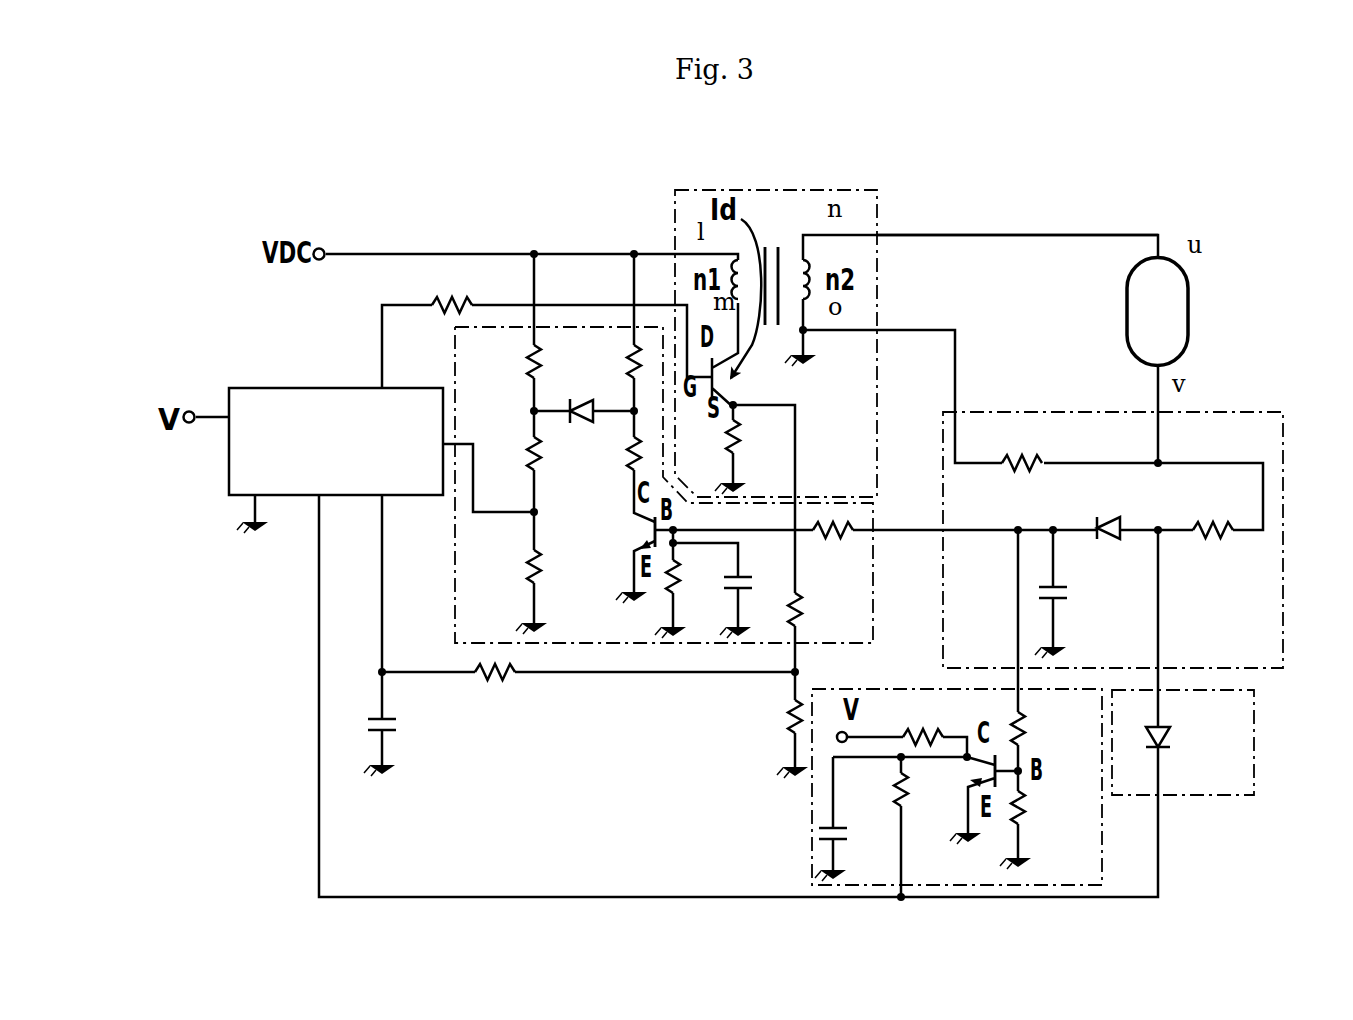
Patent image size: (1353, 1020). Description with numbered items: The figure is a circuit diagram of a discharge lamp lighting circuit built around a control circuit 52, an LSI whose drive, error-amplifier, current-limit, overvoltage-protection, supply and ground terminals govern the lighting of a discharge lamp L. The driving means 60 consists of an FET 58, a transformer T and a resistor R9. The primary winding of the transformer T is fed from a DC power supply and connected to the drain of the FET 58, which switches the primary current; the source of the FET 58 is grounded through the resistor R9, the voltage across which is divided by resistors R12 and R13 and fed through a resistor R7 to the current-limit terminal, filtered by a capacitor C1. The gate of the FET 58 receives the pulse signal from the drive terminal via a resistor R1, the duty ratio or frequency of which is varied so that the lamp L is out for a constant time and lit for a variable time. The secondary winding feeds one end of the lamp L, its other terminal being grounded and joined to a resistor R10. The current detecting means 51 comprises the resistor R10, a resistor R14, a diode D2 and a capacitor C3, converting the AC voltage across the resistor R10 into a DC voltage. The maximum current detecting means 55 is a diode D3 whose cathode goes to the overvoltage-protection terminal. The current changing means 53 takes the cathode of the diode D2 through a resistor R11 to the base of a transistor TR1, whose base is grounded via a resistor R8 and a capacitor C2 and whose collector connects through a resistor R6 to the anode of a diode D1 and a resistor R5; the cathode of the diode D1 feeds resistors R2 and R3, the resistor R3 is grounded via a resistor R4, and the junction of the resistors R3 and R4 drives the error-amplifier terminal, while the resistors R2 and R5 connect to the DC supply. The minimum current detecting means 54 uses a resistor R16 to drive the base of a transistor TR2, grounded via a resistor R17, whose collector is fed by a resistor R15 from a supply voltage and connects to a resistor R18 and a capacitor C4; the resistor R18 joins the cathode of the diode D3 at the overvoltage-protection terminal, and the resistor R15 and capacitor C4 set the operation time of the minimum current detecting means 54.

The current detecting means 51 is at (1285, 507).
The control circuit 52 is at (297, 387).
The current changing means 53 is at (876, 597).
The minimum current detecting means 54 is at (809, 831).
The maximum current detecting means 55 is at (1257, 758).
The FET 58 is at (776, 343).
The driving means 60 is at (955, 217).
The discharge lamp L is at (1165, 323).
The transformer T is at (773, 261).
The transistor TR1 is at (619, 529).
The transistor TR2 is at (956, 774).
The resistor R1 is at (572, 320).
The resistor R2 is at (515, 364).
The resistor R3 is at (515, 457).
The resistor R4 is at (514, 568).
The resistor R5 is at (616, 364).
The resistor R6 is at (616, 457).
The resistor R7 is at (495, 692).
The resistor R8 is at (693, 576).
The resistor R9 is at (720, 439).
The resistor R10 is at (1024, 482).
The resistor R11 is at (831, 547).
The resistor R12 is at (822, 607).
The resistor R13 is at (767, 716).
The resistor R14 is at (1215, 548).
The resistor R15 is at (920, 718).
The resistor R16 is at (1044, 725).
The resistor R17 is at (1044, 806).
The resistor R18 is at (876, 787).
The capacitor C1 is at (400, 726).
The capacitor C2 is at (755, 577).
The capacitor C3 is at (1070, 596).
The capacitor C4 is at (852, 792).
The diode D1 is at (584, 394).
The diode D2 is at (1113, 547).
The diode D3 is at (1178, 736).